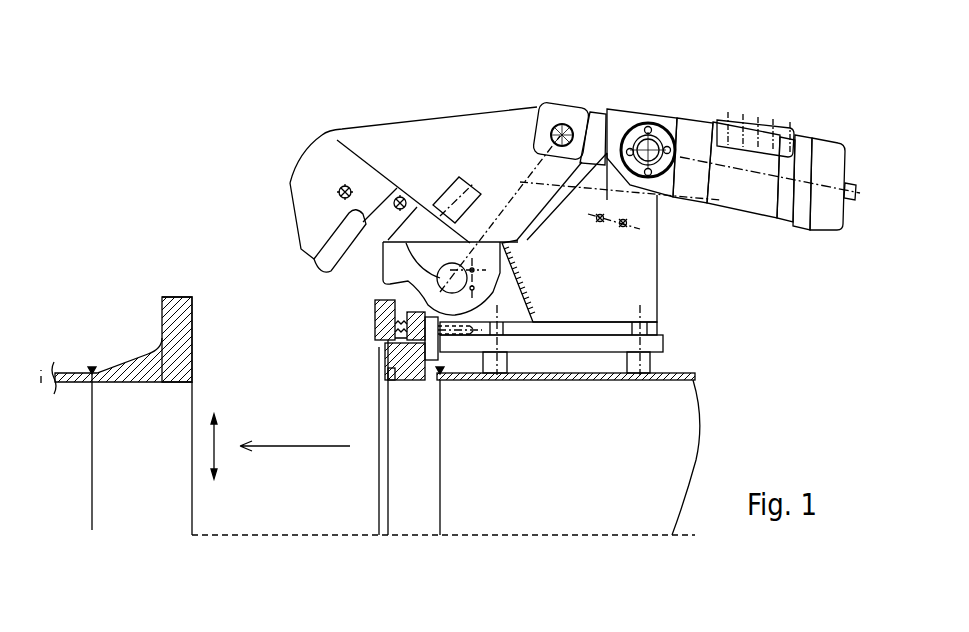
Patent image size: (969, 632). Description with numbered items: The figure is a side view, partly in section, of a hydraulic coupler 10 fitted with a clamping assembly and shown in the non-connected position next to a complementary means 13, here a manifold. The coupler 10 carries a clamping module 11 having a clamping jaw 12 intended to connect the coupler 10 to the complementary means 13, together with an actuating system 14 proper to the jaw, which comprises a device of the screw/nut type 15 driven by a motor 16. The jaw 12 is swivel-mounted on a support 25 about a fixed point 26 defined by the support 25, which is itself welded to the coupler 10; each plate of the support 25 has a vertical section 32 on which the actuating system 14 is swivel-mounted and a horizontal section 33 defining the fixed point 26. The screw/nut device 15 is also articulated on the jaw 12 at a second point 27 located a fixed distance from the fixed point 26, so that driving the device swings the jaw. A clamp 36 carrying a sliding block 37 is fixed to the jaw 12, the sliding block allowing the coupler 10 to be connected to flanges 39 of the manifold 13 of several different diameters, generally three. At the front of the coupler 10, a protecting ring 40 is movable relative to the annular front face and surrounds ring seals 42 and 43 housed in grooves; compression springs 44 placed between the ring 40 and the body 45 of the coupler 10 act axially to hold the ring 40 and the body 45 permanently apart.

The hydraulic coupler 10 is at (657, 566).
The clamping module 11 is at (418, 100).
The clamping jaw 12 is at (341, 116).
The complementary means 13 is at (105, 337).
The actuating system 14 is at (770, 100).
The device of the screw/nut type 15 is at (613, 95).
The motor 16 is at (748, 197).
The support 25 is at (638, 285).
The fixed point 26 is at (437, 277).
The second point 27 is at (566, 108).
The vertical section 32 is at (640, 228).
The horizontal section 33 is at (542, 295).
The clamp 36 is at (283, 215).
The sliding block 37 is at (320, 270).
The flange 39 is at (172, 300).
The protecting ring 40 is at (375, 315).
The ring seal 42 is at (385, 368).
The ring seal 43 is at (386, 376).
The compression spring 44 is at (385, 344).
The body 45 is at (686, 368).